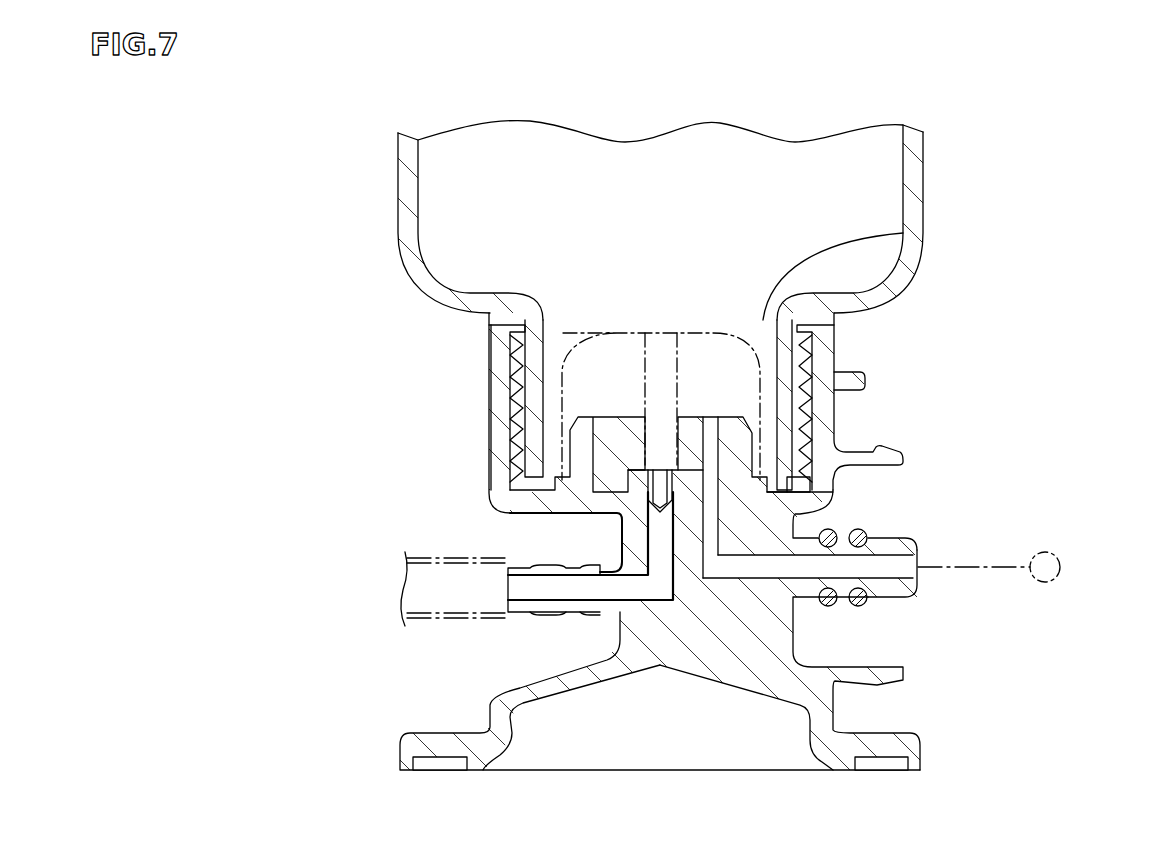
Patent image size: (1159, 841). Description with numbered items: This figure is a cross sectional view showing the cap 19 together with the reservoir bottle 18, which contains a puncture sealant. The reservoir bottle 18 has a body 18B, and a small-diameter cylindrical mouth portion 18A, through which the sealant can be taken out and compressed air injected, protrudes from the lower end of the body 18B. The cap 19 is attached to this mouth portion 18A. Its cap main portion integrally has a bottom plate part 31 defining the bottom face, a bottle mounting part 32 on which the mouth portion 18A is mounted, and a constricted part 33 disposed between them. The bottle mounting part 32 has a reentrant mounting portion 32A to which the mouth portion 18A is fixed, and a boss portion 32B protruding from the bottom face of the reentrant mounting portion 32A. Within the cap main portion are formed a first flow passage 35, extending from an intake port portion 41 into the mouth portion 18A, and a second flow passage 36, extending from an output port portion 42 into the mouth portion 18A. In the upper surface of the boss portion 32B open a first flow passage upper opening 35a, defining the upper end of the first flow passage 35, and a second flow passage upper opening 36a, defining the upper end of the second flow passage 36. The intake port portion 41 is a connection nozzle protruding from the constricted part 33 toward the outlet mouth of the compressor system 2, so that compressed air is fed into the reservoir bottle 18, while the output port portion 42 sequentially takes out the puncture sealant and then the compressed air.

The compressor system 2 is at (1060, 558).
The reservoir bottle 18 is at (767, 220).
The mouth portion 18A is at (903, 232).
The body 18B is at (925, 185).
The cap 19 is at (958, 322).
The bottom plate part 31 is at (519, 718).
The bottle mounting part 32 is at (447, 413).
The reentrant mounting portion 32A is at (525, 378).
The boss portion 32B is at (532, 334).
The constricted part 33 is at (810, 635).
The first flow passage 35 is at (918, 560).
The first flow passage upper opening 35a is at (708, 405).
The second flow passage 36 is at (580, 572).
The second flow passage upper opening 36a is at (643, 460).
The intake port portion 41 is at (883, 588).
The output port portion 42 is at (520, 627).